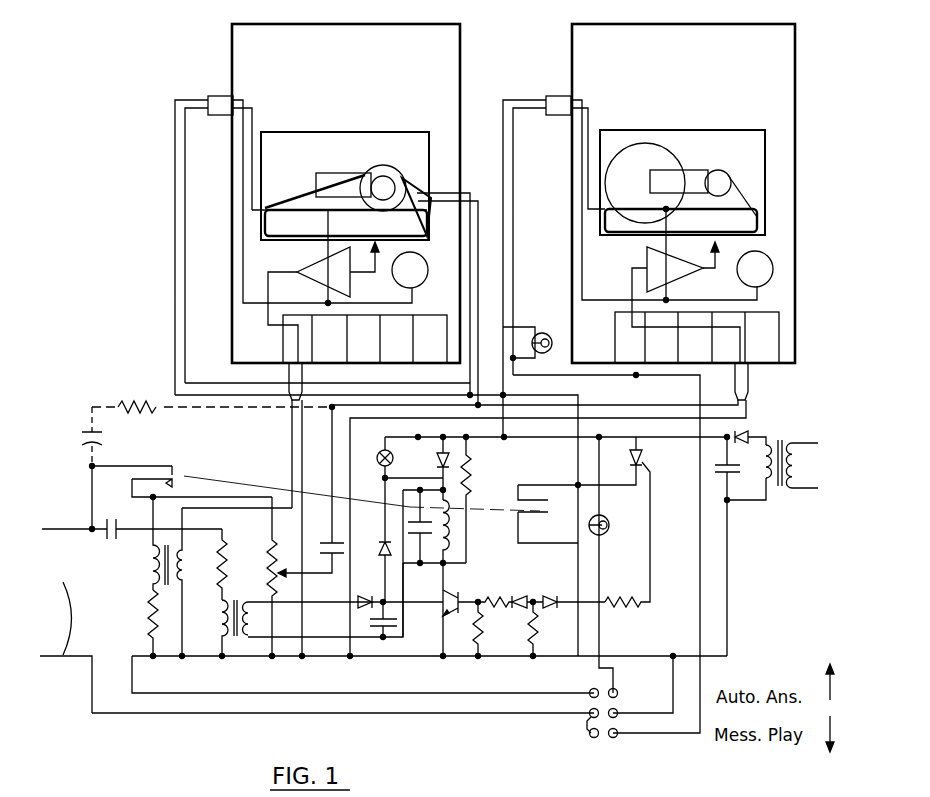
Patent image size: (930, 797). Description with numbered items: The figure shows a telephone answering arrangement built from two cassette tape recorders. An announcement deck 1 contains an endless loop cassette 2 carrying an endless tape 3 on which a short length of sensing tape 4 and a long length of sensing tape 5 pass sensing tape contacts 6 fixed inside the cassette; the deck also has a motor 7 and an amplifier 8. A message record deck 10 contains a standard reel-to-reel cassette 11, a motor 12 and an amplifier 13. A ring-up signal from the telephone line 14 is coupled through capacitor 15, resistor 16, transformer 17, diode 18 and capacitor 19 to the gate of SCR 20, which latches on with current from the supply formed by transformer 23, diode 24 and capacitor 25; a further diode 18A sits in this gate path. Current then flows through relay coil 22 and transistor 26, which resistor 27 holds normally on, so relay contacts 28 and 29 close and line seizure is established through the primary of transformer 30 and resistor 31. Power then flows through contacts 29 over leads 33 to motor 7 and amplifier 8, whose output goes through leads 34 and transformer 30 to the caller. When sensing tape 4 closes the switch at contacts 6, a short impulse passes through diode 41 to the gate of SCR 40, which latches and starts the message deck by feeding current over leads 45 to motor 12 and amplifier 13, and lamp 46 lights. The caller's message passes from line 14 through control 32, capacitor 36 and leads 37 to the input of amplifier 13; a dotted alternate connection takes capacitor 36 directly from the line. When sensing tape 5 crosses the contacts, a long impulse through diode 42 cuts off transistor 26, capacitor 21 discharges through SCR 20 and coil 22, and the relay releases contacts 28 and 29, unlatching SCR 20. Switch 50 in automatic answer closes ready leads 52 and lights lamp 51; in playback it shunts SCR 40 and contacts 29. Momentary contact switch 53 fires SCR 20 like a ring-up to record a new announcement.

The announcement deck 1 is at (354, 25).
The endless loop cassette 2 is at (361, 132).
The endless tape 3 is at (301, 204).
The short length of sensing tape 4 is at (345, 184).
The long length of sensing tape 5 is at (426, 216).
The sensing tape contacts 6 is at (414, 190).
The motor 7 is at (420, 262).
The amplifier 8 is at (307, 259).
The message record deck 10 is at (675, 26).
The reel-to-reel cassette 11 is at (735, 130).
The motor 12 is at (762, 260).
The amplifier 13 is at (647, 262).
The telephone line 14 is at (73, 523).
The capacitor 15 is at (120, 535).
The resistor 16 is at (222, 580).
The transformer 17 is at (226, 632).
The diode 18 is at (365, 596).
The diode 18A is at (379, 546).
The capacitor 19 is at (392, 628).
The SCR 20 is at (454, 455).
The capacitor 21 is at (427, 541).
The relay coil 22 is at (460, 527).
The transformer 23 is at (783, 442).
The diode 24 is at (750, 432).
The capacitor 25 is at (735, 478).
The transistor 26 is at (443, 598).
The resistor 27 is at (490, 646).
The relay contacts 28 is at (176, 476).
The relay contacts 29 is at (553, 501).
The transformer 30 is at (156, 570).
The resistor 31 is at (150, 632).
The control 32 is at (270, 548).
The leads 33 is at (177, 274).
The leads 34 is at (291, 434).
The capacitor 36 is at (86, 432).
The leads 37 is at (320, 466).
The SCR 40 is at (644, 459).
The diode 41 is at (558, 597).
The diode 42 is at (515, 596).
The leads 45 is at (505, 273).
The lamp 46 is at (547, 334).
The switch 50 is at (588, 738).
The lamp 51 is at (606, 539).
The ready leads 52 is at (433, 706).
The momentary contact switch 53 is at (377, 457).